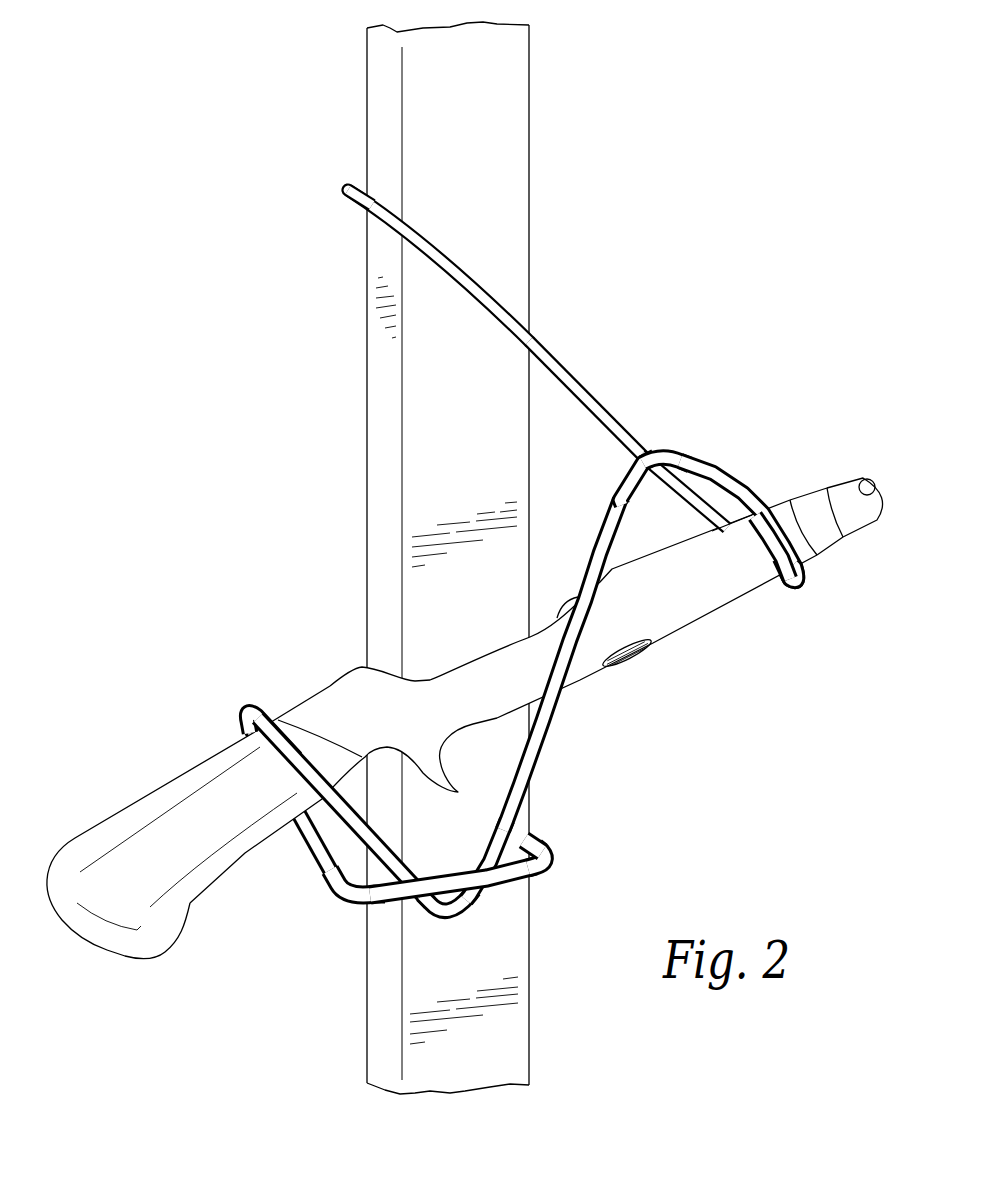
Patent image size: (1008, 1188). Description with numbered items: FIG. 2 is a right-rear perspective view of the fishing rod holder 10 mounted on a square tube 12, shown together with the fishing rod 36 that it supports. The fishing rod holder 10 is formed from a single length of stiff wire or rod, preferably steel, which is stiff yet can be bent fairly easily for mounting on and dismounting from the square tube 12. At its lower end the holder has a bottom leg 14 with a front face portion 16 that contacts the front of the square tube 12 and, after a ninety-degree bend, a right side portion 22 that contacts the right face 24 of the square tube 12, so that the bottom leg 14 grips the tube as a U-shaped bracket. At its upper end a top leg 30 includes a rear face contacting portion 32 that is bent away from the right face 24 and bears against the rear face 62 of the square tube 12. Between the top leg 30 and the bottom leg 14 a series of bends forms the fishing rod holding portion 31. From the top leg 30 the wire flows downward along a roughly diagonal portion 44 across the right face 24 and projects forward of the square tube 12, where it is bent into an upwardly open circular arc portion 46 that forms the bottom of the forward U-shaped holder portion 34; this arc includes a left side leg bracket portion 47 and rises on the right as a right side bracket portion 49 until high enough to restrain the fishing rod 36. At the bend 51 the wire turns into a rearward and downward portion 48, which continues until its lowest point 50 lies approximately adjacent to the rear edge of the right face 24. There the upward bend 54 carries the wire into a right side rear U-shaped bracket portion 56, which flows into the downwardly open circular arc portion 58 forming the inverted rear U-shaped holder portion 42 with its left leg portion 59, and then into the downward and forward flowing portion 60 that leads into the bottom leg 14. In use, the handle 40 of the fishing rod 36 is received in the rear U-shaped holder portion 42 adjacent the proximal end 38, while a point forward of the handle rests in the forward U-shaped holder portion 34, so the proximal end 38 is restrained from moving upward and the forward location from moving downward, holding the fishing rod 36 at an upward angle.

The fishing rod holder 10 is at (702, 268).
The square tube 12 is at (367, 45).
The bottom leg 14 is at (346, 906).
The front face portion 16 is at (543, 838).
The right side portion 22 is at (440, 874).
The right face 24 is at (531, 936).
The top leg 30 is at (425, 232).
The fishing rod holding portion 31 is at (608, 513).
The rear face contacting portion 32 is at (352, 204).
The forward U-shaped holder portion 34 is at (787, 582).
The fishing rod 36 is at (862, 527).
The proximal end 38 is at (110, 948).
The handle 40 is at (80, 838).
The rear U-shaped holder portion 42 is at (287, 773).
The roughly diagonal portion 44 is at (553, 353).
The upwardly open circular arc portion 46 is at (807, 582).
The left side leg bracket portion 47 is at (693, 503).
The rearward and downward portion 48 is at (552, 722).
The right side bracket portion 49 is at (760, 527).
The lowest point 50 is at (474, 920).
The bend 51 is at (663, 450).
The upward bend 54 is at (443, 923).
The right side rear U-shaped bracket portion 56 is at (387, 748).
The downwardly open circular arc portion 58 is at (238, 708).
The left leg portion 59 is at (297, 832).
The downward and forward flowing portion 60 is at (318, 862).
The rear face 62 is at (367, 1068).